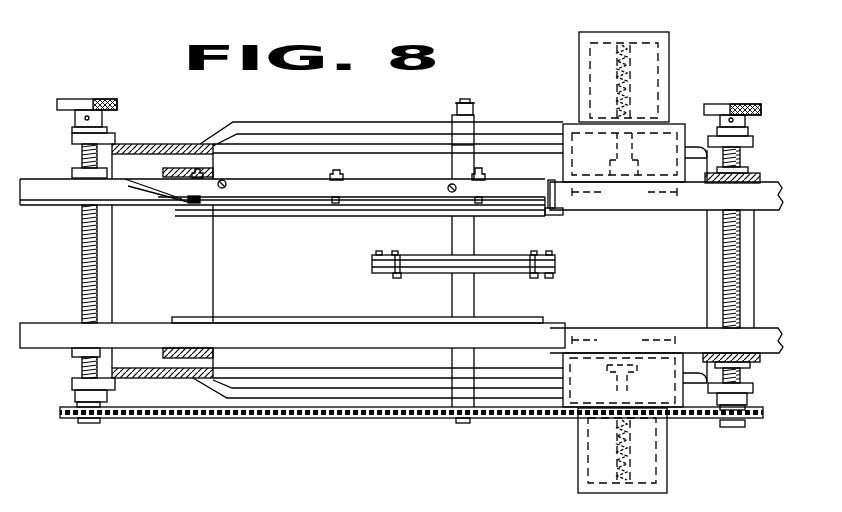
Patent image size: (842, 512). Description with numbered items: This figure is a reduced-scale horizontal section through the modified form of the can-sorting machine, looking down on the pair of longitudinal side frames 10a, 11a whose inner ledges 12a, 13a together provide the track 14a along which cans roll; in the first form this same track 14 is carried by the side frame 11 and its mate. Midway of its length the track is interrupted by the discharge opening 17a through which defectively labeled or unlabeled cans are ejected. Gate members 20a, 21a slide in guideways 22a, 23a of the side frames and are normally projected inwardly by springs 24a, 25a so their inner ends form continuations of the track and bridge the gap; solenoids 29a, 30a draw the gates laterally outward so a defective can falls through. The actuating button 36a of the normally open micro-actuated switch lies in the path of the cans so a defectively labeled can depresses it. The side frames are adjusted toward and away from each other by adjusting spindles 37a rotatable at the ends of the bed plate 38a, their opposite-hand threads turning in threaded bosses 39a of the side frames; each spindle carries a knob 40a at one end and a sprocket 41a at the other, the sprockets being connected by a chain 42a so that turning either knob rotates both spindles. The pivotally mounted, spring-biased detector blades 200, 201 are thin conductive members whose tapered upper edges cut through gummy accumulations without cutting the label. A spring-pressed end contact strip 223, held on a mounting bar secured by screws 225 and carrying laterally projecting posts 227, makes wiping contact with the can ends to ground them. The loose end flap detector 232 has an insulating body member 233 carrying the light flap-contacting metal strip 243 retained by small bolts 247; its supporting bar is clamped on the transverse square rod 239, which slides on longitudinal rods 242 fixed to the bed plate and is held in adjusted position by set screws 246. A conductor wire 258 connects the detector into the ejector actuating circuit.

The longitudinal side frame 10a is at (685, 340).
The longitudinal side frame 11a is at (698, 197).
The longitudinal ledge 12a is at (40, 323).
The longitudinal ledge 13a is at (62, 202).
The track 14a is at (769, 213).
The discharge opening 17a is at (640, 322).
The gate member 20a is at (632, 315).
The gate member 21a is at (590, 207).
The guideway 22a is at (623, 340).
The guideway 23a is at (624, 193).
The spring 24a is at (617, 467).
The spring 25a is at (627, 62).
The solenoid 29a is at (588, 462).
The solenoid 30a is at (658, 70).
The actuating button 36a is at (553, 201).
The adjusting spindle 37a is at (90, 256).
The bed plate 38a is at (367, 376).
The boss 39a is at (78, 173).
The knob 40a is at (68, 107).
The sprocket 41a is at (78, 423).
The chain 42a is at (277, 422).
The detector blade 200 is at (310, 317).
The detector blade 201 is at (300, 218).
The end contact strip 223 is at (327, 208).
The screw 225 is at (226, 185).
The post 227 is at (333, 172).
The loose end flap detector 232 is at (421, 255).
The body member 233 is at (558, 254).
The square rod 239 is at (463, 226).
The rod 242 is at (388, 128).
The flap-contacting metal strip 243 is at (493, 260).
The set screw 246 is at (463, 103).
The retaining bolt 247 is at (397, 278).
The conductor wire 258 is at (555, 275).
The track 14 is at (372, 288).
The longitudinal side frame 11 is at (157, 362).